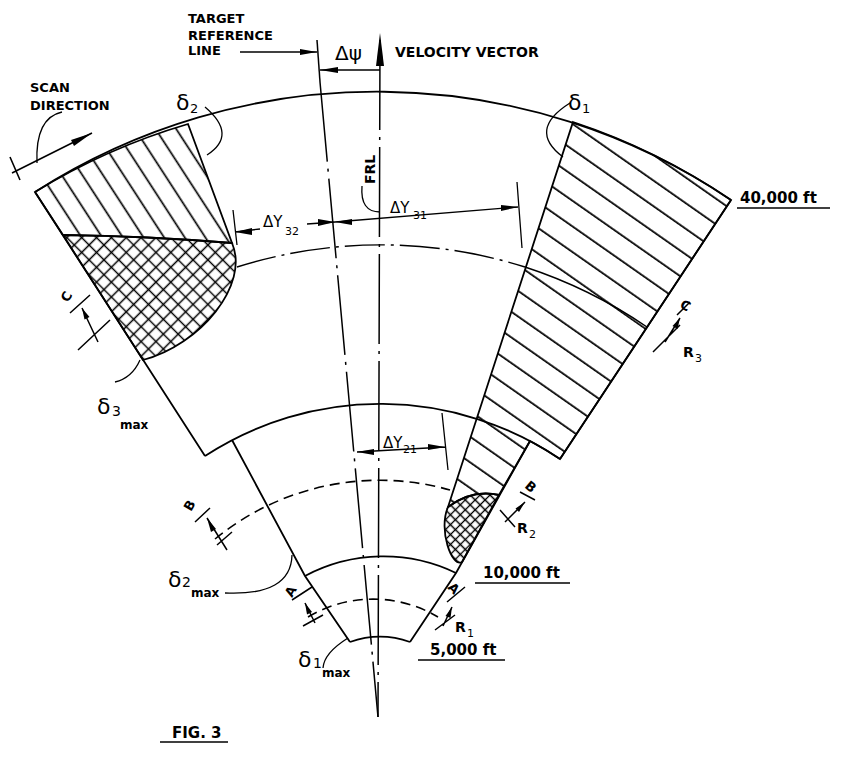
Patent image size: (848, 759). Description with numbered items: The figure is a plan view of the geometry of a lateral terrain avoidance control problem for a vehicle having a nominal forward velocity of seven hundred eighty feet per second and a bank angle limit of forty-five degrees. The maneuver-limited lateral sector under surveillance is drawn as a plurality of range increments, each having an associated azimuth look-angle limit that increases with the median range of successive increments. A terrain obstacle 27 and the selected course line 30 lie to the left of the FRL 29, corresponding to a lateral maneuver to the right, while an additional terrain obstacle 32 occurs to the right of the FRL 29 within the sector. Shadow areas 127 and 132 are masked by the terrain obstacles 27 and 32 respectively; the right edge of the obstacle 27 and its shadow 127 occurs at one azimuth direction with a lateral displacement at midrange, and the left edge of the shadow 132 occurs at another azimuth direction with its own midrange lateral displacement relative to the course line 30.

The terrain obstacle 27 is at (198, 327).
The FRL 29 is at (381, 112).
The selected course line 30 is at (327, 142).
The terrain obstacle 32 is at (447, 522).
The shadow area 127 is at (112, 182).
The shadow area 132 is at (645, 185).